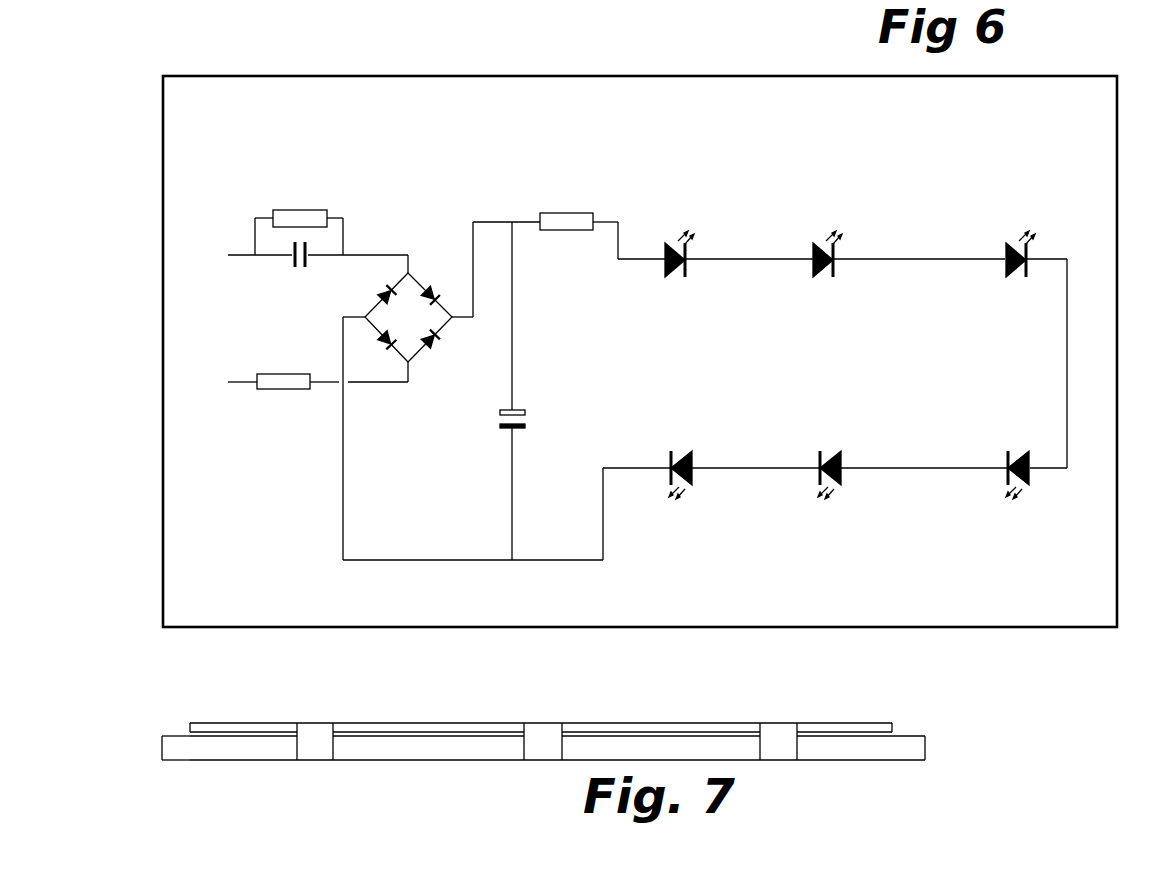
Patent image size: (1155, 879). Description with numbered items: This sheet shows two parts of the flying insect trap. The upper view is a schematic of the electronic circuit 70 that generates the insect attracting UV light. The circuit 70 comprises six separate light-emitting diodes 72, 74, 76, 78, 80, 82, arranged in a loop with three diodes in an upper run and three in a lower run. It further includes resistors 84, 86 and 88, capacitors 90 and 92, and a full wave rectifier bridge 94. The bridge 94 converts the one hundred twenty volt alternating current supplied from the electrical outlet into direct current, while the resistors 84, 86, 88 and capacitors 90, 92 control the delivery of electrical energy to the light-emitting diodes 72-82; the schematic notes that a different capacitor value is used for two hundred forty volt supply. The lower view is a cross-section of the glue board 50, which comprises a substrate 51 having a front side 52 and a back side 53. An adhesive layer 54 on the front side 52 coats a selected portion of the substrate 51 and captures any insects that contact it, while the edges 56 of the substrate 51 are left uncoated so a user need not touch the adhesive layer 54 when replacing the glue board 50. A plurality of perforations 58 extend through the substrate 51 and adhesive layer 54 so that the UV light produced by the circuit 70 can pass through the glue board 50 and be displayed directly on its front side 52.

In FIG. 7, the glue board 50 is at (157, 704).
In FIG. 7, the substrate 51 is at (835, 747).
In FIG. 7, the front side 52 is at (667, 707).
In FIG. 7, the back side 53 is at (445, 761).
In FIG. 7, the adhesive layer 54 is at (415, 723).
In FIG. 7, the edges 56 is at (175, 733).
In FIG. 7, the perforation 58 is at (310, 735).
In FIG. 6, the electronic circuit 70 is at (964, 648).
In FIG. 6, the light-emitting diode 72 is at (709, 231).
In FIG. 6, the light-emitting diode 74 is at (858, 237).
In FIG. 6, the light-emitting diode 76 is at (989, 290).
In FIG. 6, the light-emitting diode 78 is at (1036, 505).
In FIG. 6, the light-emitting diode 80 is at (855, 496).
In FIG. 6, the light-emitting diode 82 is at (705, 496).
In FIG. 6, the resistor 84 is at (267, 388).
In FIG. 6, the resistor 86 is at (313, 210).
In FIG. 6, the resistor 88 is at (570, 214).
In FIG. 6, the capacitor 90 is at (319, 235).
In FIG. 6, the capacitor 92 is at (541, 413).
In FIG. 6, the full wave rectifier bridge 94 is at (417, 280).